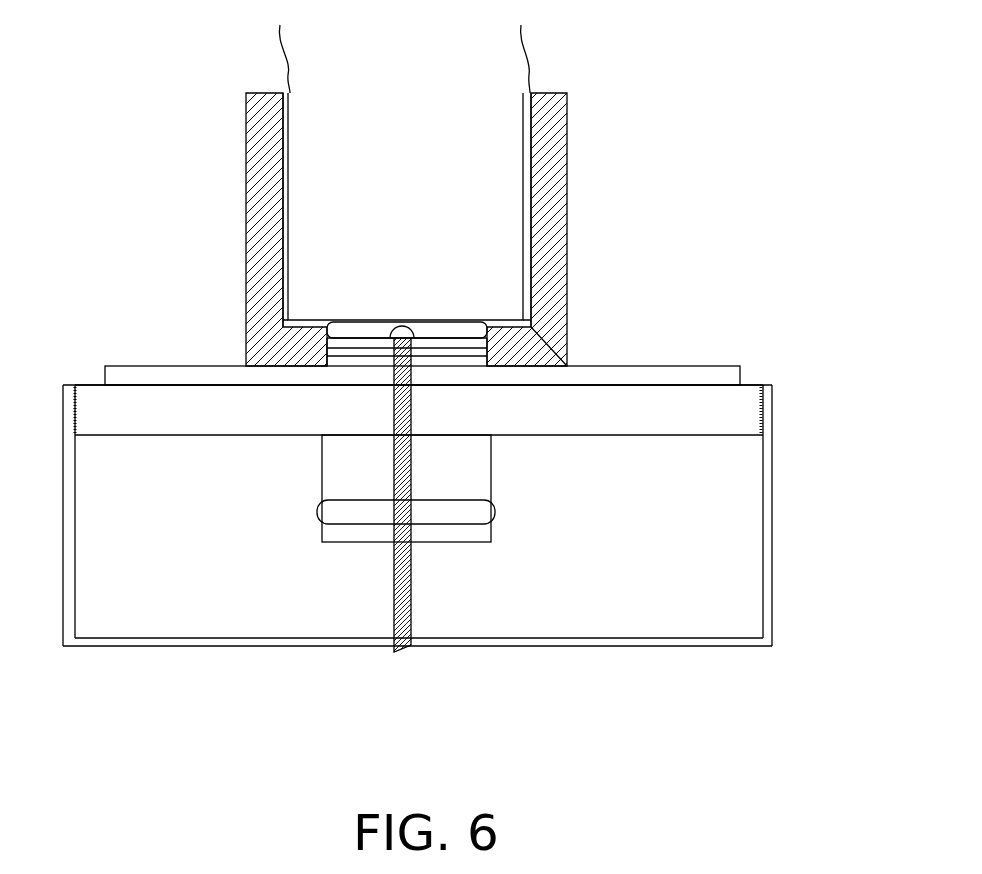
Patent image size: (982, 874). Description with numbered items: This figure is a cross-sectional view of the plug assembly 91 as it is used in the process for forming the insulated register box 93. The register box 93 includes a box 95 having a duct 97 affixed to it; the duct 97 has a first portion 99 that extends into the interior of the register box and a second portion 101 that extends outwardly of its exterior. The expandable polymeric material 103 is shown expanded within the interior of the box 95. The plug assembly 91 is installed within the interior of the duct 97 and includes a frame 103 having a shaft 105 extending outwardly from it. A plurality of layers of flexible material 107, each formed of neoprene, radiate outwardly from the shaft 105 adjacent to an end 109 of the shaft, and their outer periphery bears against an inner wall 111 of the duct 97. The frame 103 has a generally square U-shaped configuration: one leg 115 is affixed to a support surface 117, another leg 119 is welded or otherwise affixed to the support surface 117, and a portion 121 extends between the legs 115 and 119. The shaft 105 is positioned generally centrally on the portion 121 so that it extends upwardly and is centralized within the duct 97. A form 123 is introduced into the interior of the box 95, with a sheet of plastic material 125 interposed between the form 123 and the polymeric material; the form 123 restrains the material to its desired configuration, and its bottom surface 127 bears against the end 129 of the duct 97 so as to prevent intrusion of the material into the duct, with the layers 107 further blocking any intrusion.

The plug assembly 91 is at (464, 495).
The insulated register box 93 is at (458, 195).
The box 95 is at (567, 253).
The duct 97 is at (492, 468).
The first portion 99 is at (323, 350).
The second portion 101 is at (322, 475).
The frame 103 is at (553, 295).
The shaft 105 is at (413, 577).
The layers of flexible material 107 is at (448, 337).
The end of the shaft 109 is at (408, 333).
The inner wall 111 is at (478, 347).
The leg 115 is at (763, 495).
The support surface 117 is at (133, 422).
The leg 119 is at (75, 525).
The portion 121 is at (213, 636).
The form 123 is at (523, 163).
The sheet of plastic material 125 is at (524, 50).
The bottom surface 127 is at (298, 320).
The end of the duct 129 is at (355, 320).